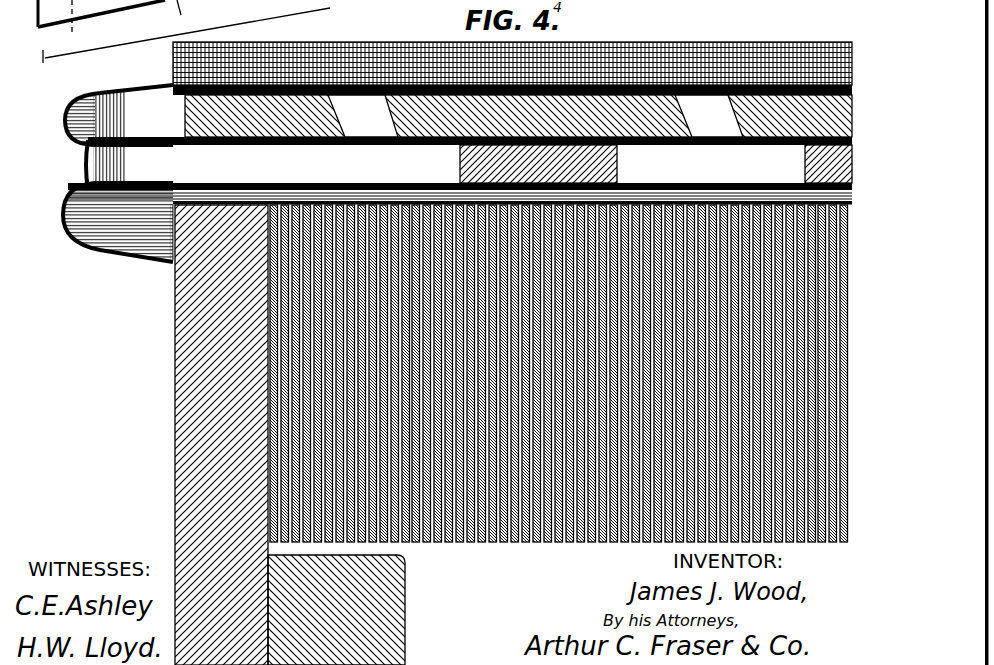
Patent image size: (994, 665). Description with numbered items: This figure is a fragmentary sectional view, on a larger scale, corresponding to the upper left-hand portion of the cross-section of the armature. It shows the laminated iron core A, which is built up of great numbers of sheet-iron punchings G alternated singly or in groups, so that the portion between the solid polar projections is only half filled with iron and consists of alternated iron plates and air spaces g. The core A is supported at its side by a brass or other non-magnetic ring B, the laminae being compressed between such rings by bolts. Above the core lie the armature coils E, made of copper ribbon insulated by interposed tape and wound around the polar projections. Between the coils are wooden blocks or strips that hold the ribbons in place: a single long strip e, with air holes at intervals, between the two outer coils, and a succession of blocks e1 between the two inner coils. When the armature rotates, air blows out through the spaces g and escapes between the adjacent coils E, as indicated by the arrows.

The armature coil E is at (437, 153).
The long wooden strip e is at (197, 117).
The wooden block e1 is at (815, 164).
The non-magnetic ring B is at (200, 463).
The laminated iron core A is at (601, 551).
The punching G is at (475, 551).
The air space g is at (582, 544).